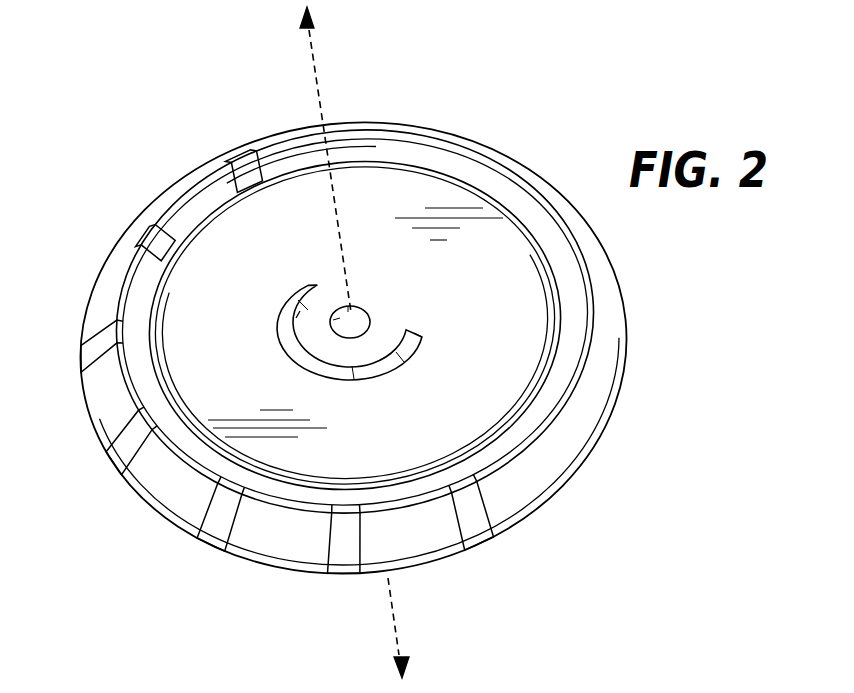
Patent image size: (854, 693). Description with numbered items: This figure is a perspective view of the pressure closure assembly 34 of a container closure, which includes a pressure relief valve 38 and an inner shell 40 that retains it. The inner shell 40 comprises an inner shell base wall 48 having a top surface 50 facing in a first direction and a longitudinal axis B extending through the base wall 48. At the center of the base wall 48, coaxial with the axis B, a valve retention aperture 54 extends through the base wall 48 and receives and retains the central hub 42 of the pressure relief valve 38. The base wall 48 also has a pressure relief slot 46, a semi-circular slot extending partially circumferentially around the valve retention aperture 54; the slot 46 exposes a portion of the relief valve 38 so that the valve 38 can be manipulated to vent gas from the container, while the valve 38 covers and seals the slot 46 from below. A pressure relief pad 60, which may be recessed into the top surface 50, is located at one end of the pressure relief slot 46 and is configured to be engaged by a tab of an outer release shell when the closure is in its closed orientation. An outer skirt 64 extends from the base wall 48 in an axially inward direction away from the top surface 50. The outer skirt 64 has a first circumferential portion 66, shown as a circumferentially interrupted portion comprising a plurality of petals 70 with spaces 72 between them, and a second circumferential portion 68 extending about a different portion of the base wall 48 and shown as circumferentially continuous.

The pressure closure assembly 34 is at (535, 112).
The pressure relief valve 38 is at (390, 295).
The central hub 42 is at (369, 313).
The inner shell 40 is at (577, 425).
The pressure relief slot 46 is at (420, 330).
The inner shell base wall 48 is at (188, 316).
The top surface 50 is at (221, 241).
The valve retention aperture 54 is at (302, 310).
The pressure relief pad 60 is at (323, 273).
The outer skirt 64 is at (610, 296).
The first circumferential portion 66 is at (52, 455).
The second circumferential portion 68 is at (662, 355).
The petals 70 is at (161, 510).
The spaces 72 is at (208, 530).
The longitudinal axis B is at (311, 52).